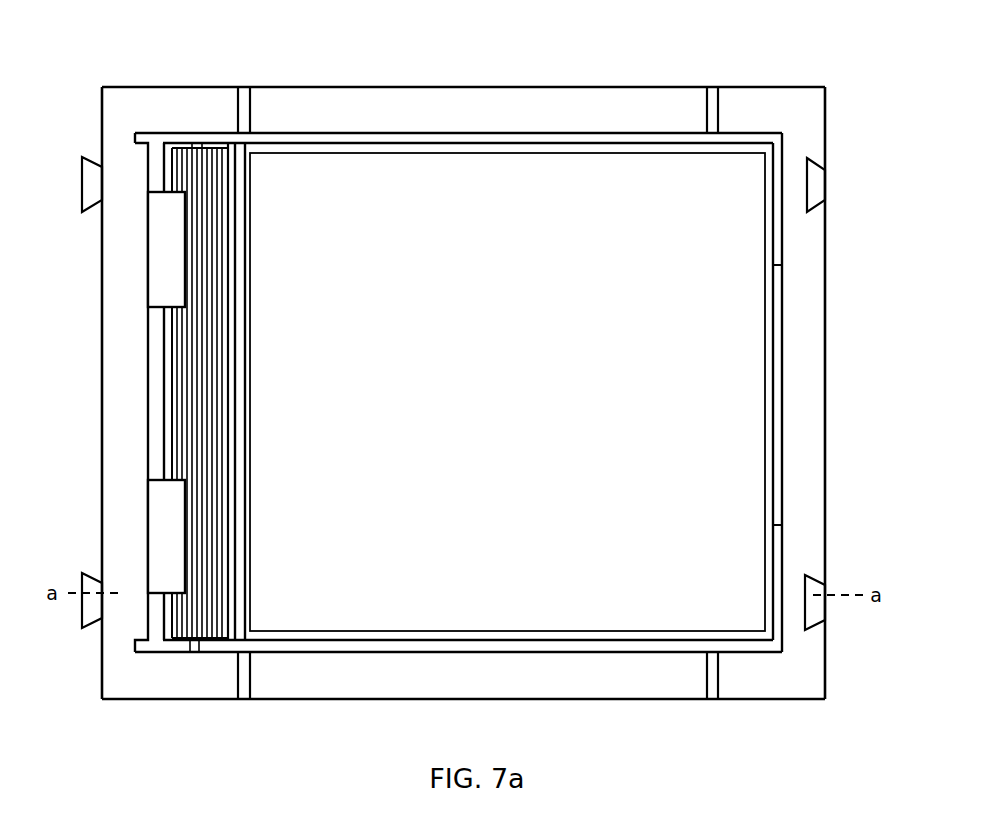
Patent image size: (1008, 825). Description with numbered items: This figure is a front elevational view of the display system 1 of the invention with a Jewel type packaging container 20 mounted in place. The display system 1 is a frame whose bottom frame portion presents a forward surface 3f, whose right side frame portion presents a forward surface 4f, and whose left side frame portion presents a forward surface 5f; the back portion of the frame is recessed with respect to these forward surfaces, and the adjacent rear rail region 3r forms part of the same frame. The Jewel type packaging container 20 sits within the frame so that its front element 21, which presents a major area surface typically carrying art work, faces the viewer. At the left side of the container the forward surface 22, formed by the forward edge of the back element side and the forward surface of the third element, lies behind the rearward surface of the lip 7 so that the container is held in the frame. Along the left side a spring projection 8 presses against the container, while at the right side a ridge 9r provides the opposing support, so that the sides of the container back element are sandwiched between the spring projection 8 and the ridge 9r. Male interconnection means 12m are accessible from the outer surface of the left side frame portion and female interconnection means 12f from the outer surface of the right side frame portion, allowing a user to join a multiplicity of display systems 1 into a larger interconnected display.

The display system 1 is at (771, 78).
The forward surface of bottom frame portion 3f is at (462, 393).
The rear frame rail members 3r is at (463, 393).
The forward surface of right side frame portion 4f is at (474, 392).
The forward surface of left side frame portion 5f is at (141, 392).
The lip 7 is at (158, 283).
The spring projection 8 is at (166, 396).
The ridge 9r is at (783, 338).
The female interconnection means 12f is at (830, 183).
The male interconnection means 12m is at (78, 182).
The Jewel type packaging container 20 is at (494, 196).
The front element 21 is at (497, 388).
The forward surface 22 is at (204, 162).